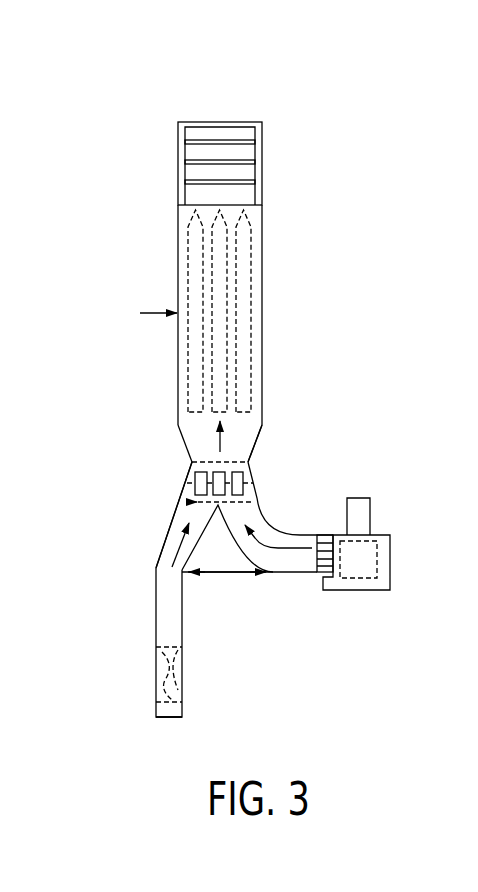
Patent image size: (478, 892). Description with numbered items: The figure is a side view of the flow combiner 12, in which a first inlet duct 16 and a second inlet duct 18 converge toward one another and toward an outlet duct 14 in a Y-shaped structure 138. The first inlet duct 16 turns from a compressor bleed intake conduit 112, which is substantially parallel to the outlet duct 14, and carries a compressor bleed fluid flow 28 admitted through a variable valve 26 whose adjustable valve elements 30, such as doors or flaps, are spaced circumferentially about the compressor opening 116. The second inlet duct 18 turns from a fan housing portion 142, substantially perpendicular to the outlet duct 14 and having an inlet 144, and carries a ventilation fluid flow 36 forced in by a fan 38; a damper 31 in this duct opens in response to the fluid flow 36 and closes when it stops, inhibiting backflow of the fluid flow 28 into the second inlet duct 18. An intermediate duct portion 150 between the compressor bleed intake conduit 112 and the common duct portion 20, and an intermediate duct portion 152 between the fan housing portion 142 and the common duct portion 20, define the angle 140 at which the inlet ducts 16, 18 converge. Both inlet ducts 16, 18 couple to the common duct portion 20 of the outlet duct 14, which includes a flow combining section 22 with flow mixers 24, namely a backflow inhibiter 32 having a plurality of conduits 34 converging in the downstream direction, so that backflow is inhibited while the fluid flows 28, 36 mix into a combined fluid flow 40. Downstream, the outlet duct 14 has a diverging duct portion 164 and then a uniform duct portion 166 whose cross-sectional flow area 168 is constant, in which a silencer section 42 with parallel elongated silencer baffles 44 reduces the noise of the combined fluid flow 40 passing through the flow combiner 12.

The flow combiner 12 is at (278, 137).
The outlet duct 14 is at (178, 292).
The first inlet duct 16 is at (158, 628).
The second inlet duct 18 is at (289, 573).
The common duct portion 20 is at (192, 462).
The flow combining section 22 is at (176, 451).
The flow mixers 24 is at (185, 493).
The variable valve 26 is at (195, 731).
The fluid flow 28 is at (168, 557).
The adjustable valve elements 30 is at (155, 672).
The damper 31 is at (323, 540).
The backflow inhibiter 32 is at (269, 496).
The conduits 34 is at (255, 485).
The fluid flow 36 is at (316, 575).
The fan 38 is at (360, 520).
The combined fluid flow 40 is at (180, 420).
The silencer section 42 is at (264, 286).
The silencer baffles 44 is at (253, 248).
The compressor bleed intake conduit 112 is at (156, 707).
The compressor opening 116 is at (185, 682).
The Y-shaped structure 138 is at (267, 659).
The angle 140 is at (230, 573).
The fan housing portion 142 is at (392, 570).
The inlet 144 is at (392, 551).
The intermediate duct portion 150 is at (174, 527).
The intermediate duct portion 152 is at (252, 463).
The diverging duct portion 164 is at (260, 438).
The uniform duct portion 166 is at (178, 337).
The cross-sectional flow area 168 is at (264, 313).